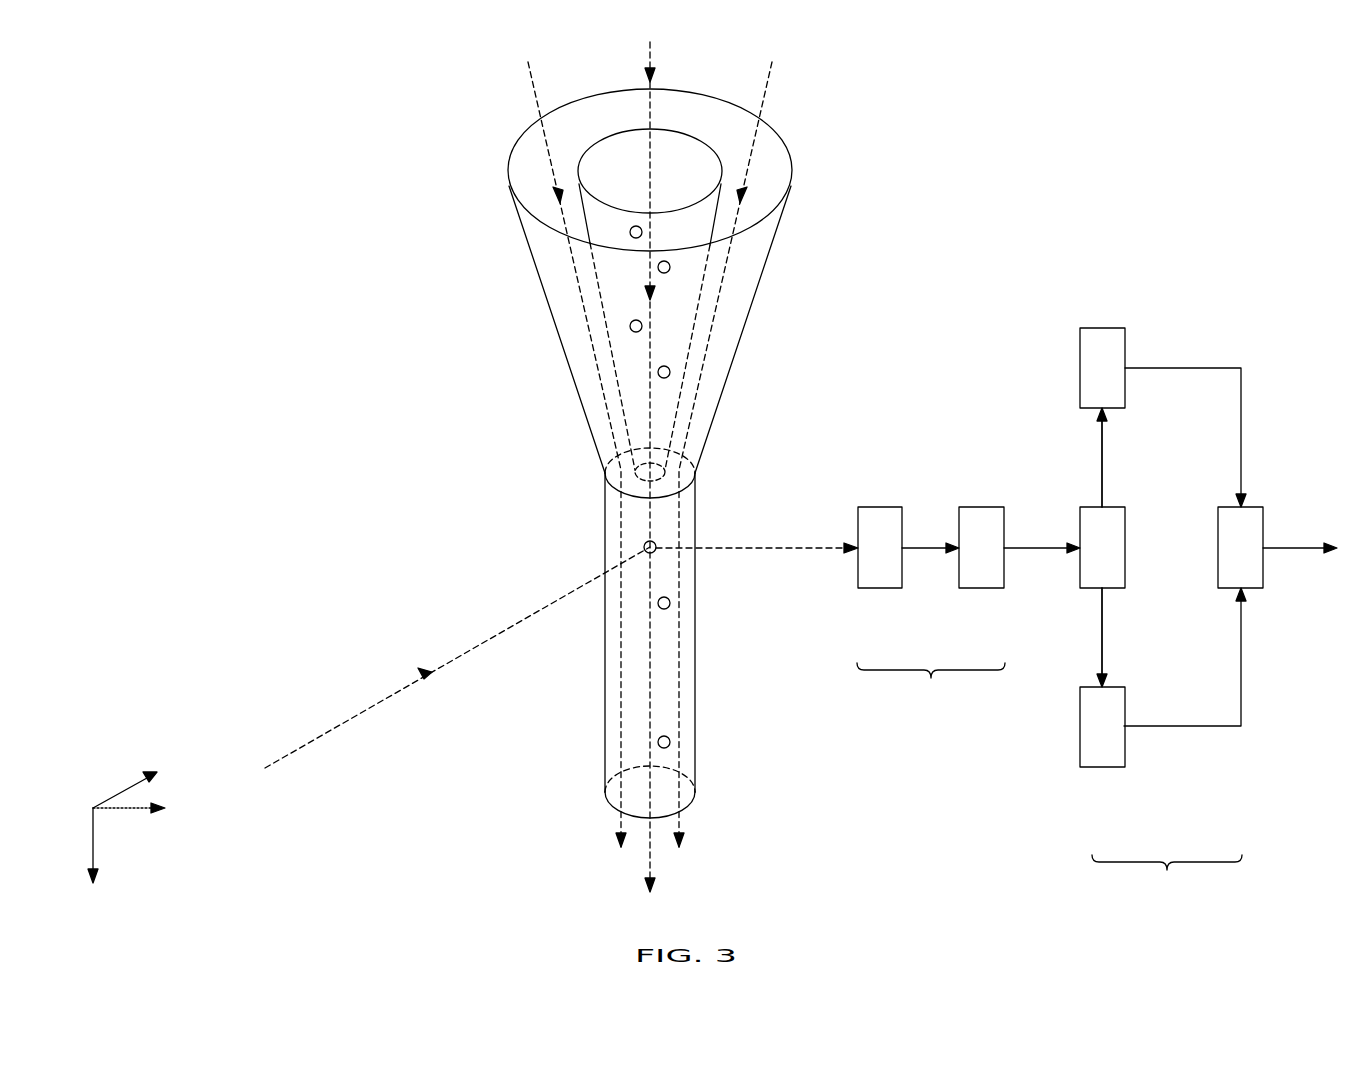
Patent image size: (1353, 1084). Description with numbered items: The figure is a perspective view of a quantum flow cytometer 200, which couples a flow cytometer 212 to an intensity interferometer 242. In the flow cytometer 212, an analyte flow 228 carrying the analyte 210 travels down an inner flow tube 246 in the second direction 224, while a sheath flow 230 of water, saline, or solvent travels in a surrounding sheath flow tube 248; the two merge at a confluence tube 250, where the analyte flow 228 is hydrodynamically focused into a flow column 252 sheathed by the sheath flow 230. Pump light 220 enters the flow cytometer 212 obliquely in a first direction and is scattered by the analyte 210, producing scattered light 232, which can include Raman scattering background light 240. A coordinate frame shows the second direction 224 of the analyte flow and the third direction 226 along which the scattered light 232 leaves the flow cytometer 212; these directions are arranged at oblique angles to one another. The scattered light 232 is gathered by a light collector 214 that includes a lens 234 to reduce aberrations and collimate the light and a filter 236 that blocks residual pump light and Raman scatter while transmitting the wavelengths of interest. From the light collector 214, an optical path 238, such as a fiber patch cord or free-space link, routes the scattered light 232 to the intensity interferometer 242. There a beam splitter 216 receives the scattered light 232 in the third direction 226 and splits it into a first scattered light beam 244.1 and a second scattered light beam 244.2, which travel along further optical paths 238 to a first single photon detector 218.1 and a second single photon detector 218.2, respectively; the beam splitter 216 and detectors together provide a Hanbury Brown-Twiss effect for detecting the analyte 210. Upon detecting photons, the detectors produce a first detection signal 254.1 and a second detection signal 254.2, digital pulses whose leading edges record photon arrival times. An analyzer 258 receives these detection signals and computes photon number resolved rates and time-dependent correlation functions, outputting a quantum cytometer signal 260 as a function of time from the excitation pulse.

The quantum flow cytometer 200 is at (63, 65).
The analyte 210 is at (670, 373).
The flow cytometer 212 is at (536, 268).
The light collector 214 is at (931, 685).
The beam splitter 216 is at (1110, 574).
The first single photon detector 218.1 is at (1105, 338).
The second single photon detector 218.2 is at (1105, 768).
The pump light 220 is at (363, 712).
The second direction 224 is at (138, 778).
The third direction 226 is at (148, 808).
The analyte flow 228 is at (648, 52).
The sheath flow 230 is at (528, 80).
The scattered light 232 is at (751, 551).
The lens 234 is at (880, 589).
The filter 236 is at (983, 589).
The optical path 238 is at (1058, 551).
The Raman scattering background light 240 is at (795, 546).
The intensity interferometer 242 is at (1167, 877).
The first scattered light beam 244.1 is at (1103, 478).
The second scattered light beam 244.2 is at (1103, 655).
The inner flow tube 246 is at (683, 130).
The sheath flow tube 248 is at (765, 268).
The confluence tube 250 is at (696, 770).
The flow column 252 is at (681, 652).
The first detection signal 254.1 is at (1240, 410).
The second detection signal 254.2 is at (1240, 695).
The analyzer 258 is at (1255, 520).
The quantum cytometer signal 260 is at (1302, 551).